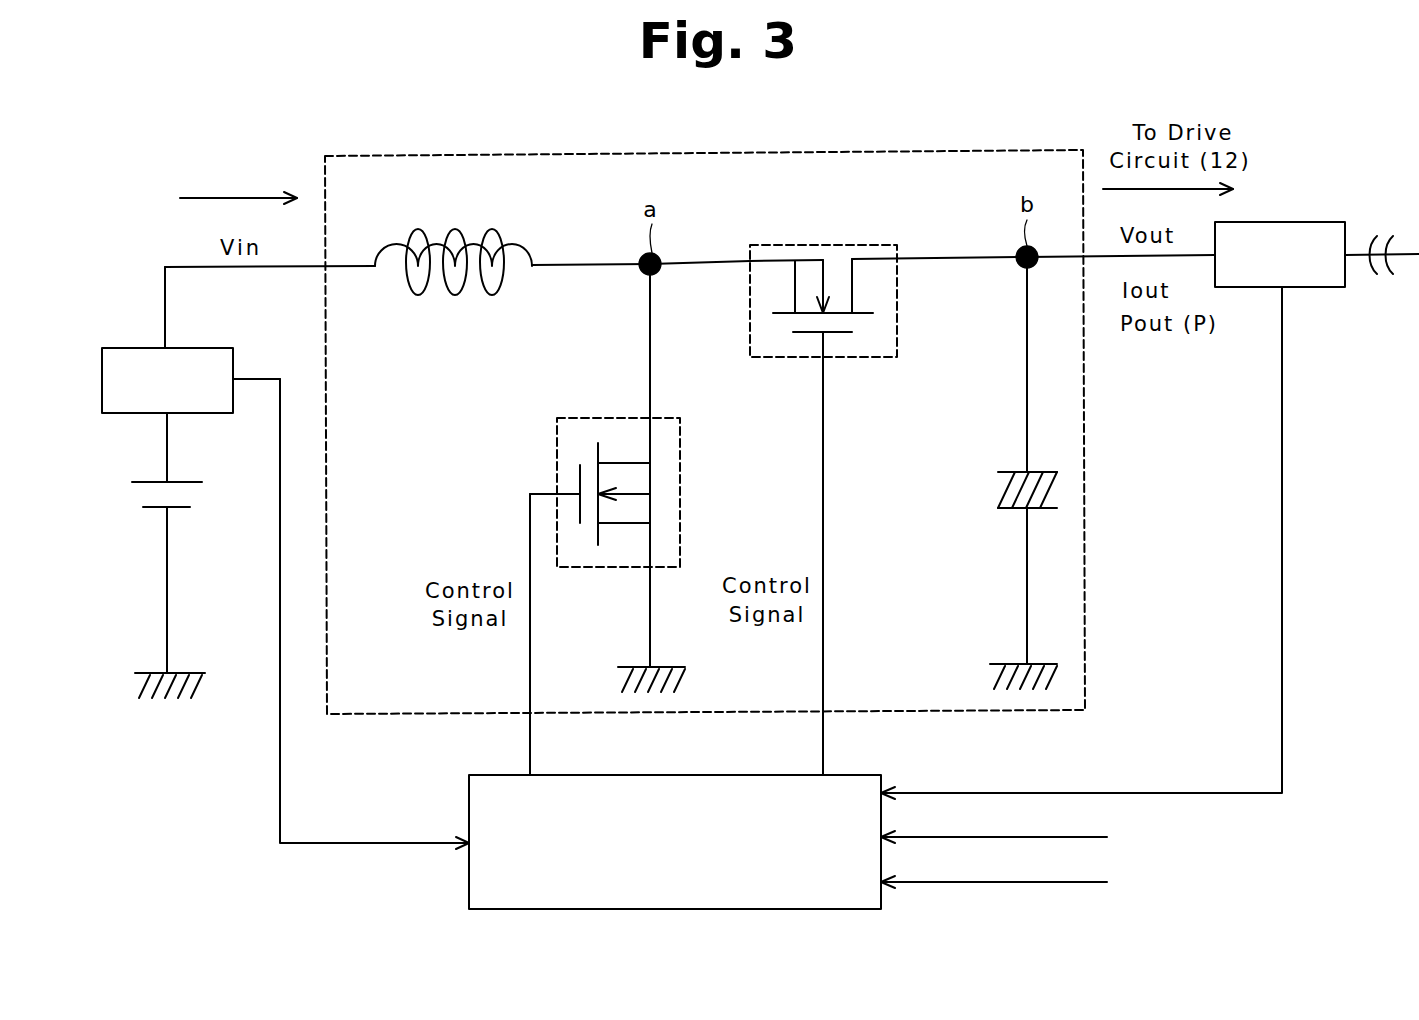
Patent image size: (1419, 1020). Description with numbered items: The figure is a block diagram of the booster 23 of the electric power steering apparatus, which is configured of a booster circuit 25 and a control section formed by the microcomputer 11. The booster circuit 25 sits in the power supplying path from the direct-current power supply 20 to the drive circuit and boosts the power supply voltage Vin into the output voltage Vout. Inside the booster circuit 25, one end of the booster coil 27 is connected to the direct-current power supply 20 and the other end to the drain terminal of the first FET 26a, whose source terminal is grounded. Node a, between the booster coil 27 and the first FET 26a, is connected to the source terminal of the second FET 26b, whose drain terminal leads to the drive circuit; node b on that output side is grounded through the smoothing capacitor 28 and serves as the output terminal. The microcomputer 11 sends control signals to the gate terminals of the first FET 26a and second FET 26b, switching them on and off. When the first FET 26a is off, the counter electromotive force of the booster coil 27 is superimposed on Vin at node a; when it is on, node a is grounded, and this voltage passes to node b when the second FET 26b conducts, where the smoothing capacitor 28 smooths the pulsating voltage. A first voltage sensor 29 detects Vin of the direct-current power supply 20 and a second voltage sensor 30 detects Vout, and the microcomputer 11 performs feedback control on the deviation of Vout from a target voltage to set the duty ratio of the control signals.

The microcomputer 11 is at (663, 775).
The direct-current power supply 20 is at (190, 482).
The booster 23 is at (242, 837).
The booster circuit 25 is at (822, 152).
The first FET 26a is at (590, 418).
The second FET 26b is at (898, 321).
The booster coil 27 is at (520, 222).
The smoothing capacitor 28 is at (1010, 472).
The first voltage sensor 29 is at (207, 347).
The second voltage sensor 30 is at (1318, 222).